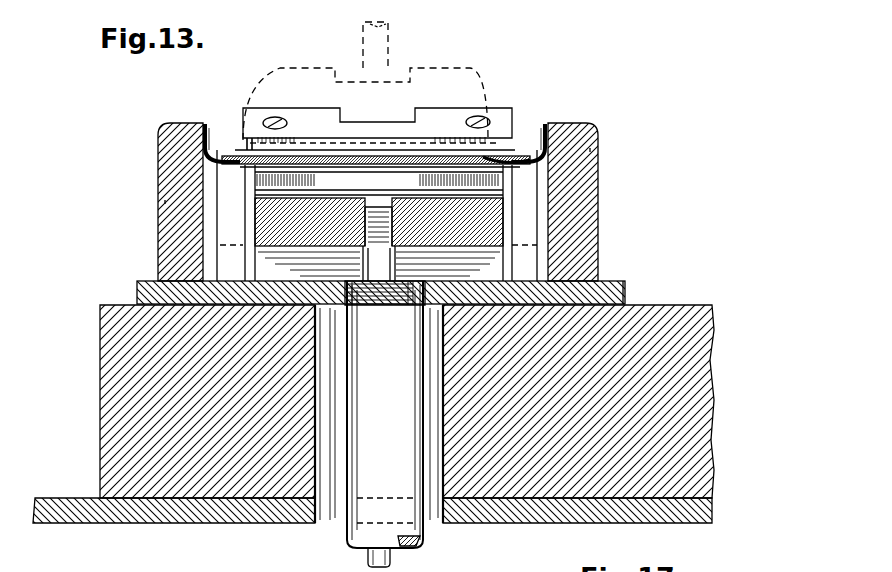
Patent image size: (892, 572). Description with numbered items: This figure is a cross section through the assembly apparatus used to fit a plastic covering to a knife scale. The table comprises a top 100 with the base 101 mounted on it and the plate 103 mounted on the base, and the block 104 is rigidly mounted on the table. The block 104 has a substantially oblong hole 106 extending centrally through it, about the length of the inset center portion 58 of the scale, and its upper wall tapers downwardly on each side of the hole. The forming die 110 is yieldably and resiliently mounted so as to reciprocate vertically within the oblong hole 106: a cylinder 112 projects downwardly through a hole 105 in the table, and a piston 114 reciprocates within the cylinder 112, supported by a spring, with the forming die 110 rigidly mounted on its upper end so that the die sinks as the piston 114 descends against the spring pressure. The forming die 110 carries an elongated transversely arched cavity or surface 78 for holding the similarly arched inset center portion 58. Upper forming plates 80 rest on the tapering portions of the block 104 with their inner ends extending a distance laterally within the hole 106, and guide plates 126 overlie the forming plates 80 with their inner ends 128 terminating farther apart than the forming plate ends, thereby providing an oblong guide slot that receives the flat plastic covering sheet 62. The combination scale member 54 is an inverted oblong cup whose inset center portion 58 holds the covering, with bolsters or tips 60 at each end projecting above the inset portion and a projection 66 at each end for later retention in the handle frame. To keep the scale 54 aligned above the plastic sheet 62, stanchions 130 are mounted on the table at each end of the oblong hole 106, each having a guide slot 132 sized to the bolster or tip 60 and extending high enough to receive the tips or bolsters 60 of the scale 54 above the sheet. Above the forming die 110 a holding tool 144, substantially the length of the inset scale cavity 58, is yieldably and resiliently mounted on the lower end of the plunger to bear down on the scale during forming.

The combination scale and bolster or tip forming member 54 is at (357, 162).
The inset elongated center portion 58 is at (425, 160).
The bolsters or tips 60 is at (218, 165).
The flat plastic covering sheet 62 is at (483, 157).
The projection 66 is at (205, 125).
The elongated transversely arched cavity or surface 78 is at (275, 193).
The upper forming plates 80 is at (310, 180).
The top 100 is at (565, 515).
The base 101 is at (687, 440).
The plate 103 is at (623, 290).
The block 104 is at (625, 270).
The hole 105 is at (332, 482).
The oblong hole 106 is at (508, 223).
The forming die 110 is at (258, 231).
The cylinder 112 is at (427, 530).
The piston 114 is at (393, 557).
The guide plates 126 is at (252, 118).
The inner ends of guide plates 128 is at (268, 121).
The stanchions 130 is at (170, 202).
The guide slot 132 is at (215, 243).
The holding tool 144 is at (483, 81).